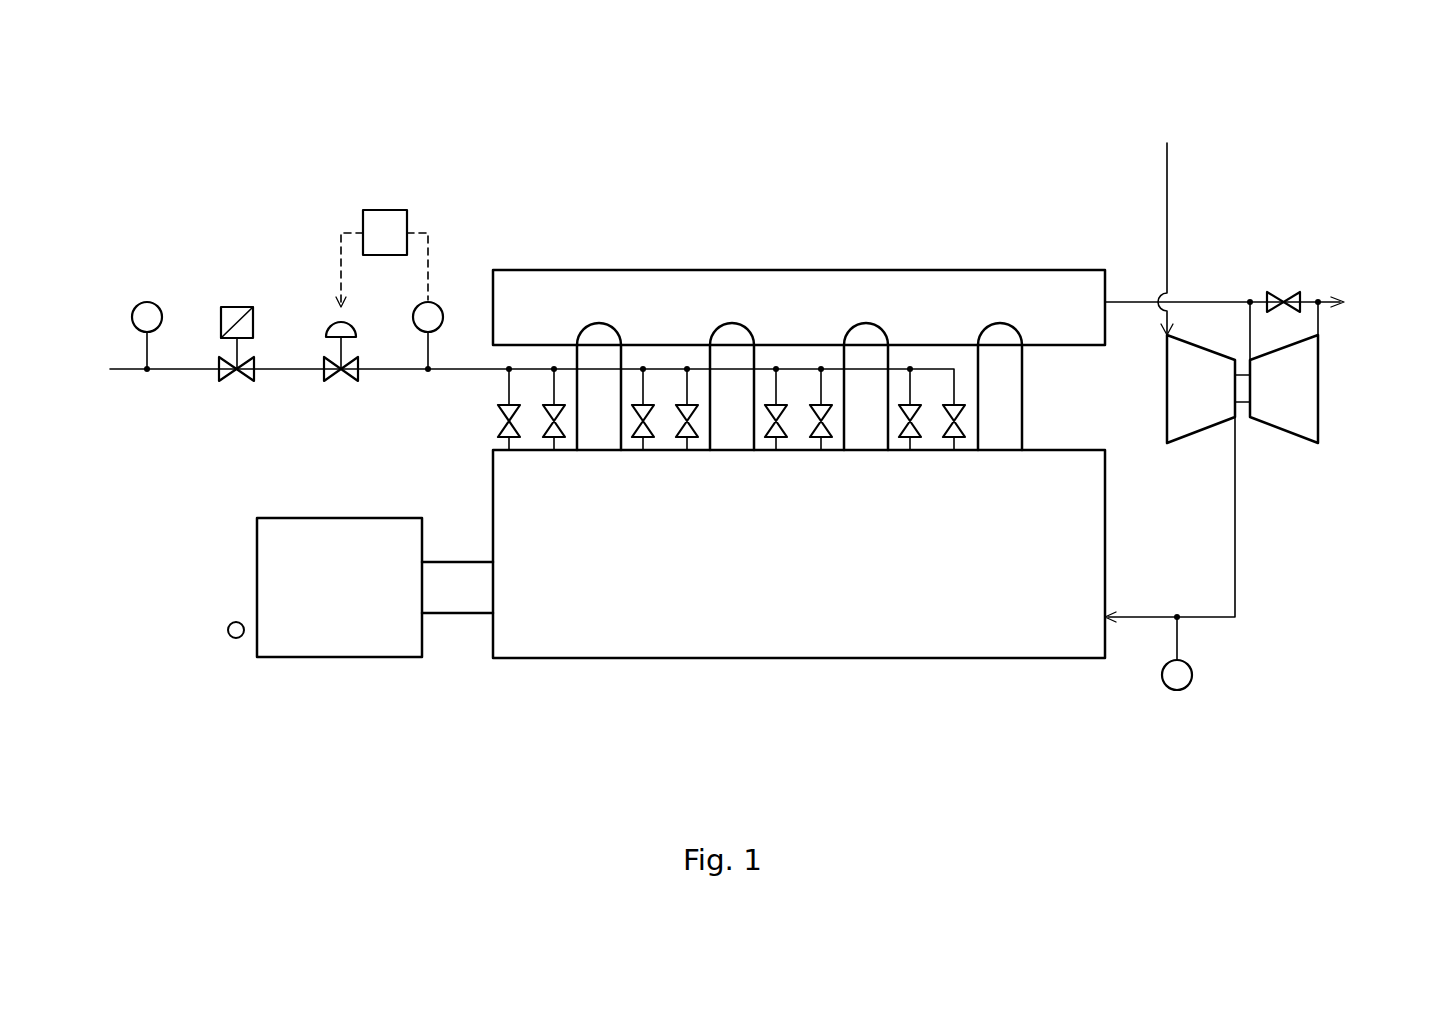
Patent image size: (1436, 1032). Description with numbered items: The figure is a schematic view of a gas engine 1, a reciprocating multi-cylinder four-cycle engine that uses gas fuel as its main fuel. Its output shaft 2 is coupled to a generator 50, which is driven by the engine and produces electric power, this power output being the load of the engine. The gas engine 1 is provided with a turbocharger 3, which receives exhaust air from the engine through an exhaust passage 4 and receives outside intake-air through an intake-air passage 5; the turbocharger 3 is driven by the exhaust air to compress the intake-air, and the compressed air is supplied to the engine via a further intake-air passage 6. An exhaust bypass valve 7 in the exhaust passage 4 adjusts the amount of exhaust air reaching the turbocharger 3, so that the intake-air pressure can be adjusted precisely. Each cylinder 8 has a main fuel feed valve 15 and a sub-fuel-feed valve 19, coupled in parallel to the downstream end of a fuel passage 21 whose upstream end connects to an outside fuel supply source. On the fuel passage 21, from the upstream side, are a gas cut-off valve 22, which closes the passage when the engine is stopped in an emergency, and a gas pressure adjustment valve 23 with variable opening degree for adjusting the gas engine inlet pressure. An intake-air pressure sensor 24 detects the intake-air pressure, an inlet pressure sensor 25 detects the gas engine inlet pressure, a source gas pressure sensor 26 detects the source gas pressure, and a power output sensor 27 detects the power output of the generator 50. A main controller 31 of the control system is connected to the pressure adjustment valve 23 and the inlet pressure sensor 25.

The gas engine 1 is at (580, 659).
The output shaft 2 is at (470, 615).
The turbocharger 3 is at (1285, 433).
The exhaust passage 4 is at (1126, 300).
The intake-air passage 5 is at (1168, 246).
The intake-air passage 6 is at (1235, 508).
The exhaust bypass valve 7 is at (1290, 292).
The cylinder 8 is at (588, 323).
The main fuel feed valve 15 is at (511, 443).
The sub-fuel-feed valve 19 is at (556, 443).
The fuel passage 21 is at (208, 372).
The gas cut-off valve 22 is at (237, 383).
The gas pressure adjustment valve 23 is at (342, 383).
The intake-air pressure sensor 24 is at (1185, 691).
The inlet pressure sensor 25 is at (433, 302).
The source gas pressure sensor 26 is at (142, 302).
The power output sensor 27 is at (240, 640).
The main controller 31 is at (376, 209).
The generator 50 is at (363, 659).